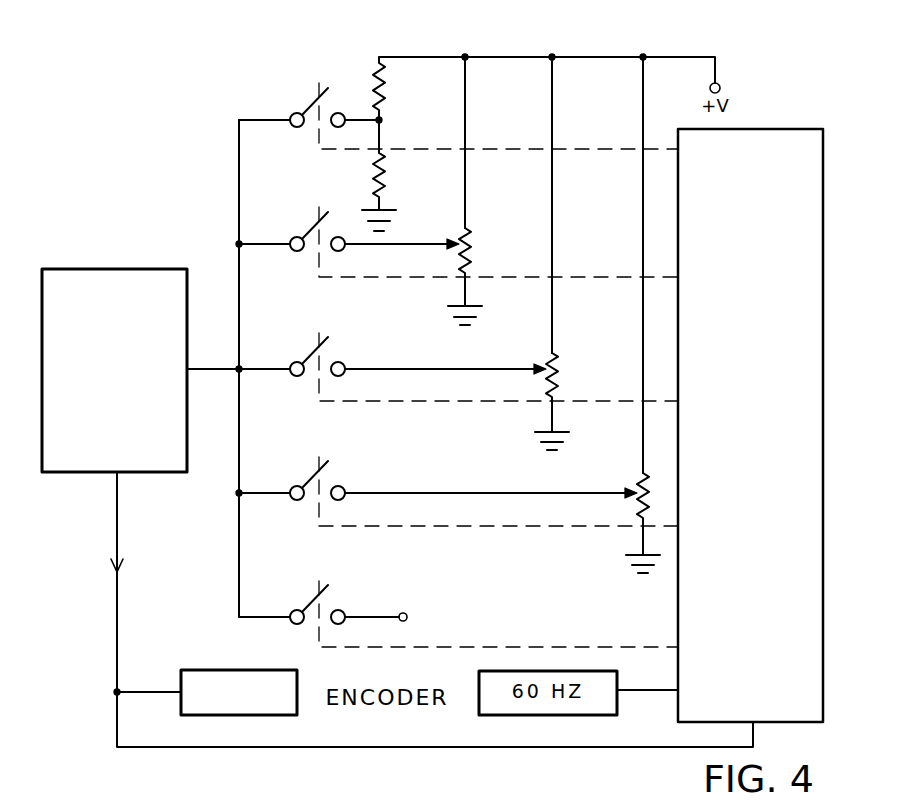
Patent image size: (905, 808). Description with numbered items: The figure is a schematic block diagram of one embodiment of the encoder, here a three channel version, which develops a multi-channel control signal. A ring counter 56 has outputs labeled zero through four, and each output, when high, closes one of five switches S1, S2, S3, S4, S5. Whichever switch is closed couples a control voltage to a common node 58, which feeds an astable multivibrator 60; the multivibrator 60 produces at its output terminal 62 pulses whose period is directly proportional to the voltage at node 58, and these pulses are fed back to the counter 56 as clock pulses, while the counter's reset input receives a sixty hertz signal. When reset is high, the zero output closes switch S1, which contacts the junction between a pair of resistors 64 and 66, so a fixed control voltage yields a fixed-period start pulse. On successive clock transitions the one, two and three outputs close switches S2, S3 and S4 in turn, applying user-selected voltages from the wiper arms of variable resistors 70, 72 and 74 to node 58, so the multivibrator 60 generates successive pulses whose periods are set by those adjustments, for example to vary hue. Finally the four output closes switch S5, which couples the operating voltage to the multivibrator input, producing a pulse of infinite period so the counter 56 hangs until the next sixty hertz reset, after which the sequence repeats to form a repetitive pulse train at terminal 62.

The ring counter 56 is at (677, 618).
The common node 58 is at (239, 370).
The astable multivibrator 60 is at (112, 268).
The output terminal 62 is at (226, 669).
The resistor 64 is at (386, 94).
The resistor 66 is at (386, 183).
The variable resistor 70 is at (474, 262).
The variable resistor 72 is at (560, 380).
The variable resistor 74 is at (635, 484).
The switch S1 is at (291, 114).
The switch S2 is at (291, 238).
The switch S3 is at (291, 363).
The switch S4 is at (291, 487).
The switch S5 is at (293, 611).